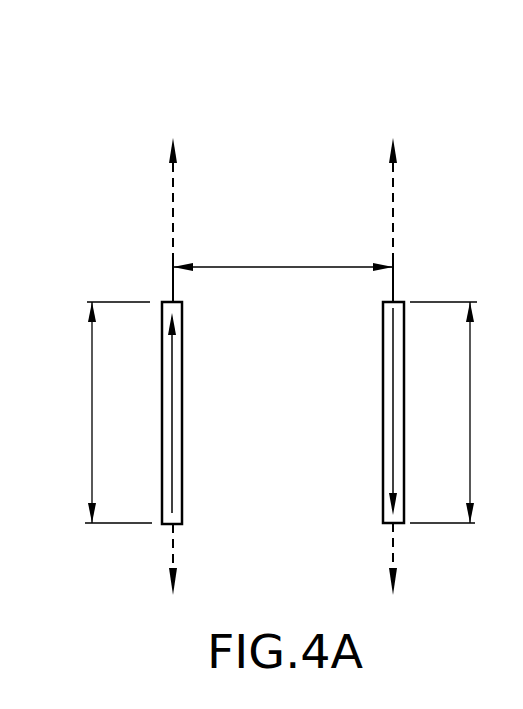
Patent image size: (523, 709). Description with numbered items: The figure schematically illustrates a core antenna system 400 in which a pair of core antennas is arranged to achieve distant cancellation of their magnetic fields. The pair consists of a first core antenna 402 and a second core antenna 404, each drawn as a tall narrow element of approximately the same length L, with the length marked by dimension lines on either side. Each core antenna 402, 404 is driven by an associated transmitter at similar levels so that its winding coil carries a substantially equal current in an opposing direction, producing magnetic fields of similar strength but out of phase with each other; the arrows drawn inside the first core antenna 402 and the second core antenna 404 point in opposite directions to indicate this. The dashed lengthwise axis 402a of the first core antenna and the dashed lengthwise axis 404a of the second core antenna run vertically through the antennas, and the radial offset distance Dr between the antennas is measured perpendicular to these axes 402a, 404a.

The core antenna system 400 is at (128, 105).
The first core antenna 402 is at (183, 398).
The lengthwise axis of the first core antenna 402a is at (172, 180).
The second core antenna 404 is at (383, 343).
The lengthwise axis of the second core antenna 404a is at (395, 197).